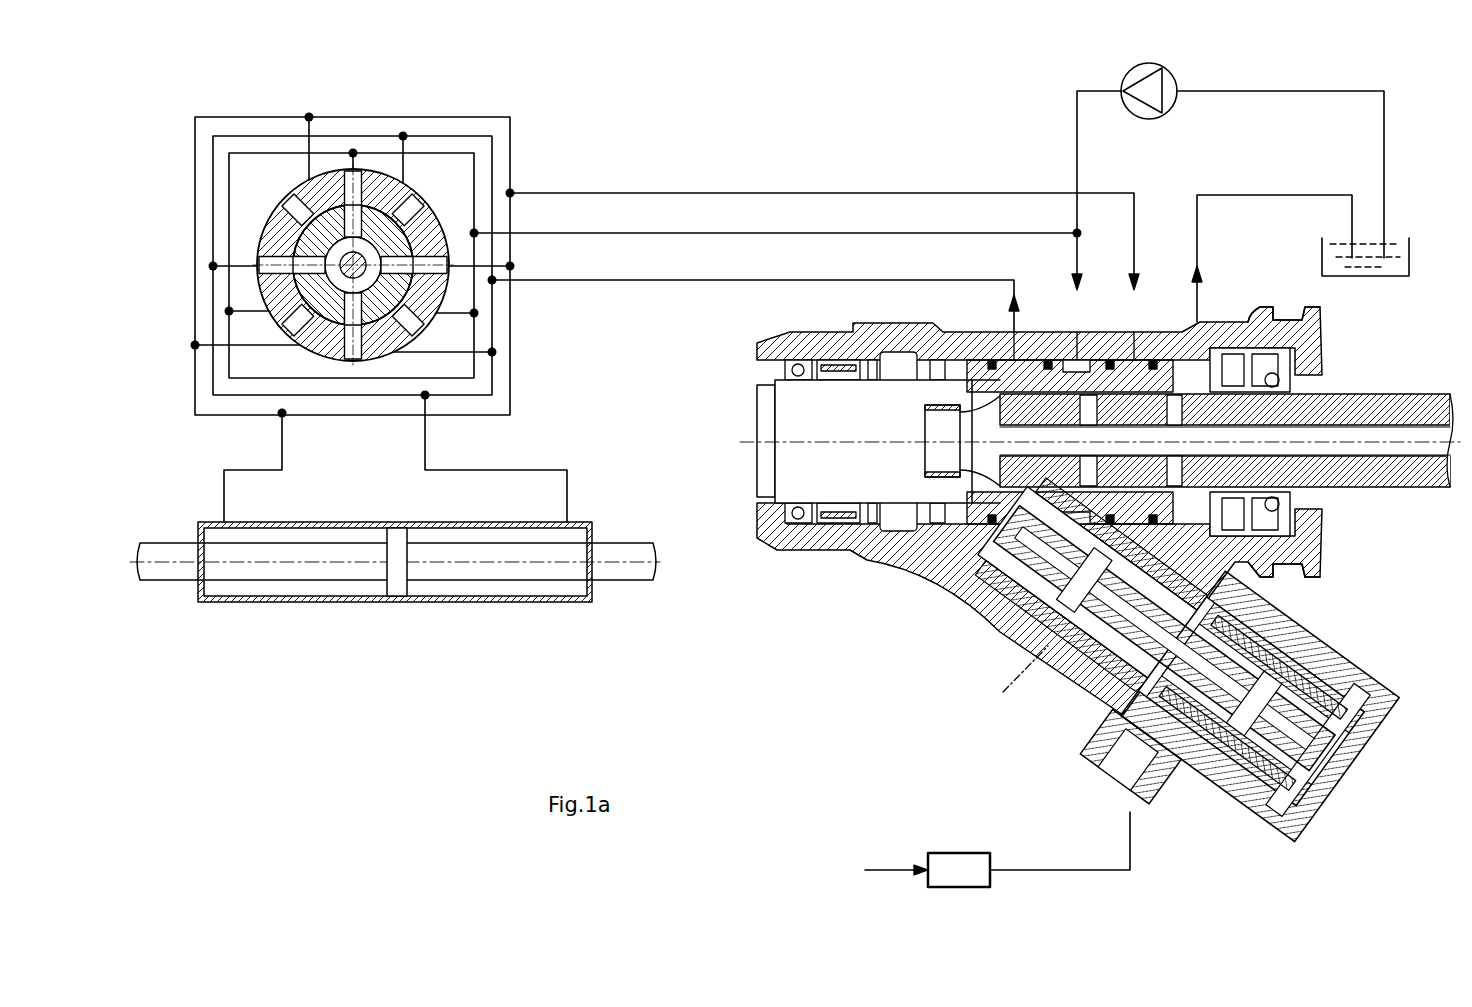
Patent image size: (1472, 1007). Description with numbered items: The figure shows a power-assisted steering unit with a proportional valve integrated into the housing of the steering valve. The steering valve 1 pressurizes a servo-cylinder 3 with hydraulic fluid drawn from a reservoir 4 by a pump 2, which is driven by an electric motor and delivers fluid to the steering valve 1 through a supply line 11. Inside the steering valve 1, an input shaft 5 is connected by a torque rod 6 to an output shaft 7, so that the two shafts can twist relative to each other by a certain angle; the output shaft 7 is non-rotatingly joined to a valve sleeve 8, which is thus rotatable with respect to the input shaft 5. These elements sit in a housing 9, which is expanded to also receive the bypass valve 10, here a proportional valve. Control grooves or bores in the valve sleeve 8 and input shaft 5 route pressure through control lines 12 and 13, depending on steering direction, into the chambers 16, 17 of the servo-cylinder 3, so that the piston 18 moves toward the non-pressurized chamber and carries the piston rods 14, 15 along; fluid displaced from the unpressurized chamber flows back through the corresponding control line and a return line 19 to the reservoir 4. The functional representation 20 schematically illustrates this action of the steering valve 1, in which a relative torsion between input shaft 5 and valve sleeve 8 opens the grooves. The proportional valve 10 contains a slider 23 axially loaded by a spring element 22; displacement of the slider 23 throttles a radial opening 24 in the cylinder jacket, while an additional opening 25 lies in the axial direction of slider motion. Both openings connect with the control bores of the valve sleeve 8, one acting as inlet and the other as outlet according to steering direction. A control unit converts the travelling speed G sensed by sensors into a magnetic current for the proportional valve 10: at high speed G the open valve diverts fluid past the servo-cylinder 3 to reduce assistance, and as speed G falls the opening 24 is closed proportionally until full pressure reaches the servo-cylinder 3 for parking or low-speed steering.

The steering valve 1 is at (1340, 372).
The pump 2 is at (1152, 85).
The servo-cylinder 3 is at (395, 601).
The reservoir 4 is at (1367, 263).
The input shaft 5 is at (1422, 478).
The torque rod 6 is at (1378, 450).
The output shaft 7 is at (787, 403).
The valve sleeve 8 is at (1091, 337).
The housing 9 is at (1258, 328).
The bypass valve 10 is at (1174, 667).
The supply line 11 is at (1077, 133).
The control line 12 is at (602, 193).
The control line 13 is at (572, 281).
The piston rod 14 is at (628, 570).
The piston rod 15 is at (163, 570).
The chamber 16 is at (527, 585).
The chamber 17 is at (287, 587).
The piston 18 is at (393, 582).
The return line 19 is at (1313, 196).
The functional representation 20 is at (322, 99).
The spring element 22 is at (1016, 679).
The slider 23 is at (1253, 702).
The radial opening 24 is at (1237, 570).
The additional opening 25 is at (1340, 704).
The speed G is at (985, 849).